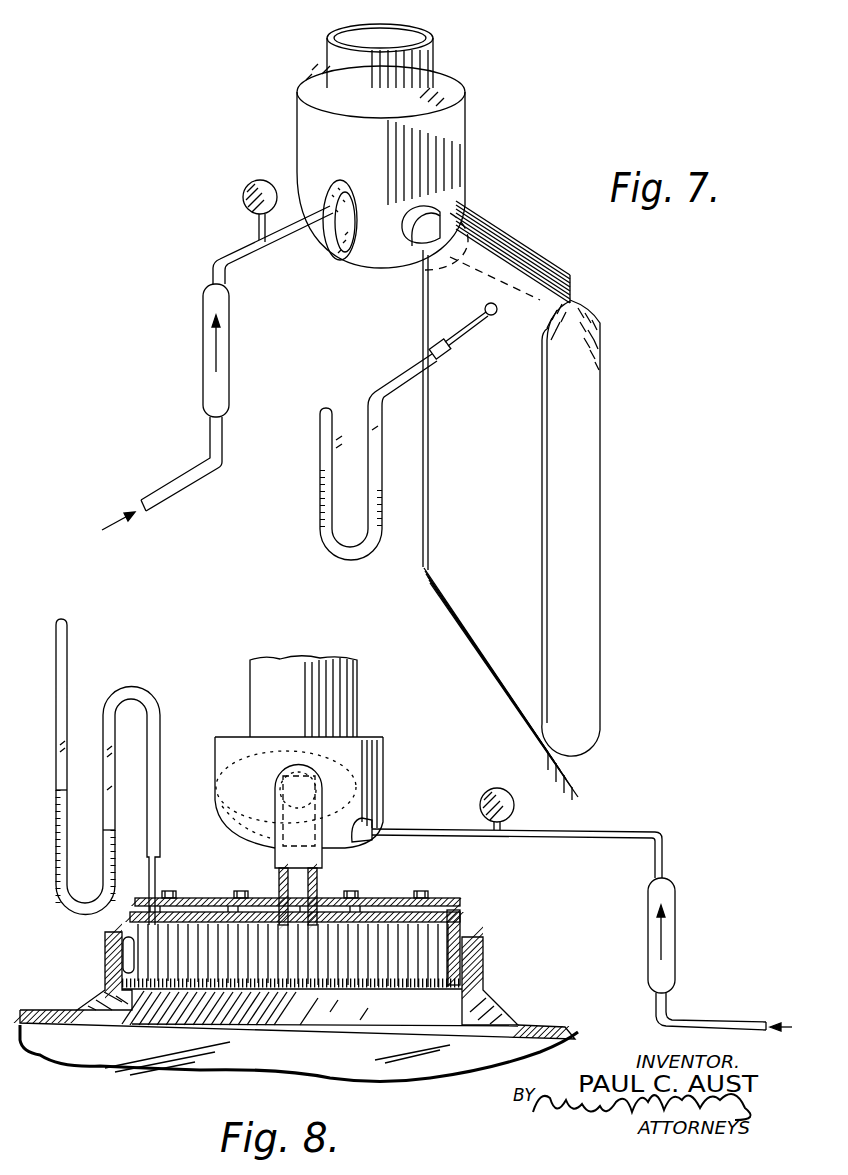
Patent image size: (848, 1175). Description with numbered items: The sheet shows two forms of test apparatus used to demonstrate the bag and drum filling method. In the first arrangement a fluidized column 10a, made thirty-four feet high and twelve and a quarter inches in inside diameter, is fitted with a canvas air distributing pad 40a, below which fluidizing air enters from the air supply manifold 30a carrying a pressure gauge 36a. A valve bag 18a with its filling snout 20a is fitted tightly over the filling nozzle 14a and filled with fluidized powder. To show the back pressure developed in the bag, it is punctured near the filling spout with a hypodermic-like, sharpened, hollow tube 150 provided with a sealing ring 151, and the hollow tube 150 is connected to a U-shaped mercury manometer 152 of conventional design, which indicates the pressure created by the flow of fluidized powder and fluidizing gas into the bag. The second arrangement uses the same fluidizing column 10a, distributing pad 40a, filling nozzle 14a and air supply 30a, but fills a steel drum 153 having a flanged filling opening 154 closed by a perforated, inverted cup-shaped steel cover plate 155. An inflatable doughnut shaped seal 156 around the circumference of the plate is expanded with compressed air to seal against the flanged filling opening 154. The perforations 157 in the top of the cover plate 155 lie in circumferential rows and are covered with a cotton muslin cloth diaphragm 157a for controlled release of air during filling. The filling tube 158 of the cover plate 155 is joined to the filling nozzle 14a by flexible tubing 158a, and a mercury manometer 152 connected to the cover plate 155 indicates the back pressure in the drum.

In FIG. 7, the fluidized column 10a is at (433, 47).
In FIG. 8, the fluidized column 10a is at (337, 659).
In FIG. 7, the filling nozzle 14a is at (407, 242).
In FIG. 8, the filling nozzle 14a is at (310, 772).
In FIG. 7, the valve bag 18a is at (594, 376).
In FIG. 7, the filling snout 20a is at (428, 248).
In FIG. 7, the air supply manifold 30a is at (247, 256).
In FIG. 8, the air supply manifold 30a is at (607, 832).
In FIG. 7, the pressure gauge 36a is at (244, 196).
In FIG. 7, the canvas air distributing pad 40a is at (340, 230).
In FIG. 8, the canvas air distributing pad 40a is at (232, 813).
In FIG. 7, the hollow tube 150 is at (458, 330).
In FIG. 7, the sealing ring 151 is at (493, 316).
In FIG. 7, the mercury manometer 152 is at (320, 522).
In FIG. 8, the mercury manometer 152 is at (141, 690).
In FIG. 8, the steel drum 153 is at (518, 1023).
In FIG. 8, the flanged filling opening 154 is at (485, 962).
In FIG. 8, the cover plate 155 is at (460, 930).
In FIG. 8, the inflatable doughnut shaped seal 156 is at (126, 948).
In FIG. 8, the perforations 157 is at (400, 924).
In FIG. 8, the cotton muslin cloth diaphragm 157a is at (364, 905).
In FIG. 8, the filling tube 158 is at (317, 899).
In FIG. 8, the flexible tubing 158a is at (275, 832).